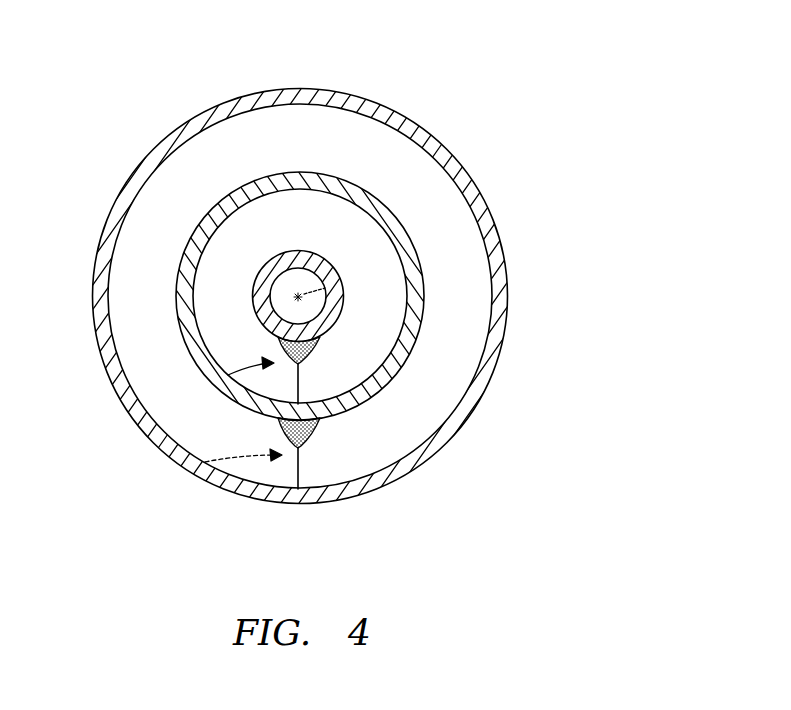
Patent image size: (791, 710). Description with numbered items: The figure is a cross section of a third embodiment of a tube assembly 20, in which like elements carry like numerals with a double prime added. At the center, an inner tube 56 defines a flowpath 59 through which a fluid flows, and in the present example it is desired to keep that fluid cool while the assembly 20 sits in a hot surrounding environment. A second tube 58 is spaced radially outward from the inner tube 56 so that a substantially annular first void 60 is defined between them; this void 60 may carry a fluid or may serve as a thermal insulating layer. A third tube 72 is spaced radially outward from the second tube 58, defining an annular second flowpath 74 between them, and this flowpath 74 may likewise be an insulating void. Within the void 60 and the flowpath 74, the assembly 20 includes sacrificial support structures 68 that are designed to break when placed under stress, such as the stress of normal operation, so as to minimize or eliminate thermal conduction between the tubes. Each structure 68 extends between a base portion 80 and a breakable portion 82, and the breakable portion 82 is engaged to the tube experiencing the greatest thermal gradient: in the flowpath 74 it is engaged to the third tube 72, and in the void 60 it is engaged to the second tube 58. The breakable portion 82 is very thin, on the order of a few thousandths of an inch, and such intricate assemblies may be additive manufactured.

The tube assembly 20 is at (460, 112).
The inner tube 56 is at (387, 221).
The second tube 58 is at (338, 261).
The flowpath 59 is at (342, 287).
The first void 60 is at (306, 238).
The sacrificial support structure 68 is at (228, 375).
The third tube 72 is at (506, 259).
The second flowpath 74 is at (470, 358).
The base portion 80 is at (318, 352).
The breakable portion 82 is at (306, 382).